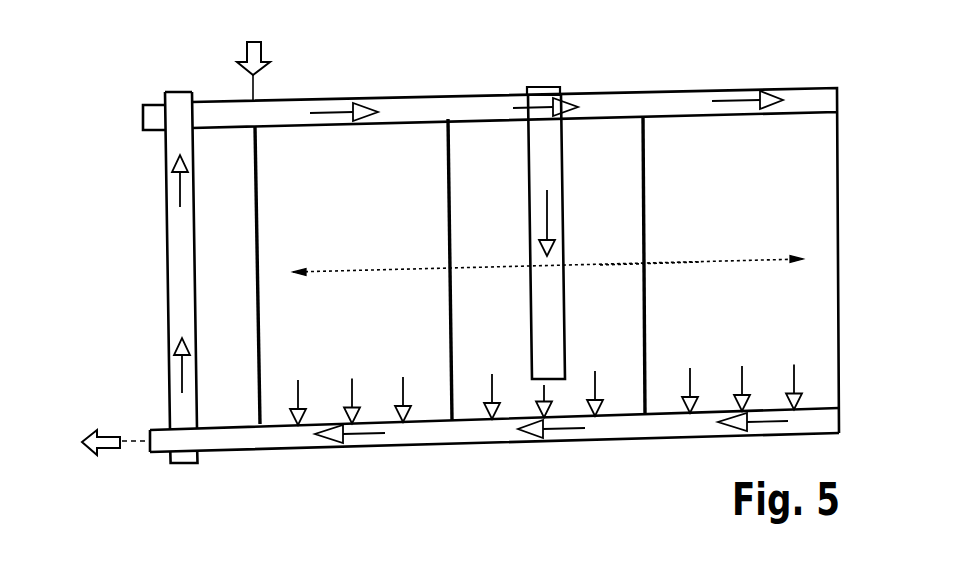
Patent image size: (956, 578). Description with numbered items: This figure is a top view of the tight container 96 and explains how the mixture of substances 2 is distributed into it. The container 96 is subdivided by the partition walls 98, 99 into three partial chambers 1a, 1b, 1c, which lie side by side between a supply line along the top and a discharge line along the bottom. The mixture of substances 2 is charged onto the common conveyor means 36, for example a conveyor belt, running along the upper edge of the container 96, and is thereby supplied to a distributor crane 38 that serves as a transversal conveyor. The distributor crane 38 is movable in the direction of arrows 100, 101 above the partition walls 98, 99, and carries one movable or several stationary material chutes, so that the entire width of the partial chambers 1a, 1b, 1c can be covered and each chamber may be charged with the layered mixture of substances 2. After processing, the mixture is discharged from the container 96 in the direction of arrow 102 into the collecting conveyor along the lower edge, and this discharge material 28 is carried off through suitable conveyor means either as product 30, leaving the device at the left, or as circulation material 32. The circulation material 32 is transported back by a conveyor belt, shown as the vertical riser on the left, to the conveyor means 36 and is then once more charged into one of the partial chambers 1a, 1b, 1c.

The mixture of substances 2 is at (247, 50).
The conveyor means 36 is at (426, 112).
The circulation material 32 is at (180, 192).
The discharge material 28 is at (379, 445).
The product 30 is at (103, 428).
The distributor crane 38 is at (550, 266).
The tight container 96 is at (256, 286).
The partition wall 98 is at (450, 317).
The partition wall 99 is at (647, 310).
The arrow 100 is at (707, 260).
The arrow 101 is at (335, 270).
The arrow 102 is at (690, 372).
The partial chamber 1a is at (377, 166).
The partial chamber 1b is at (507, 166).
The partial chamber 1c is at (752, 157).